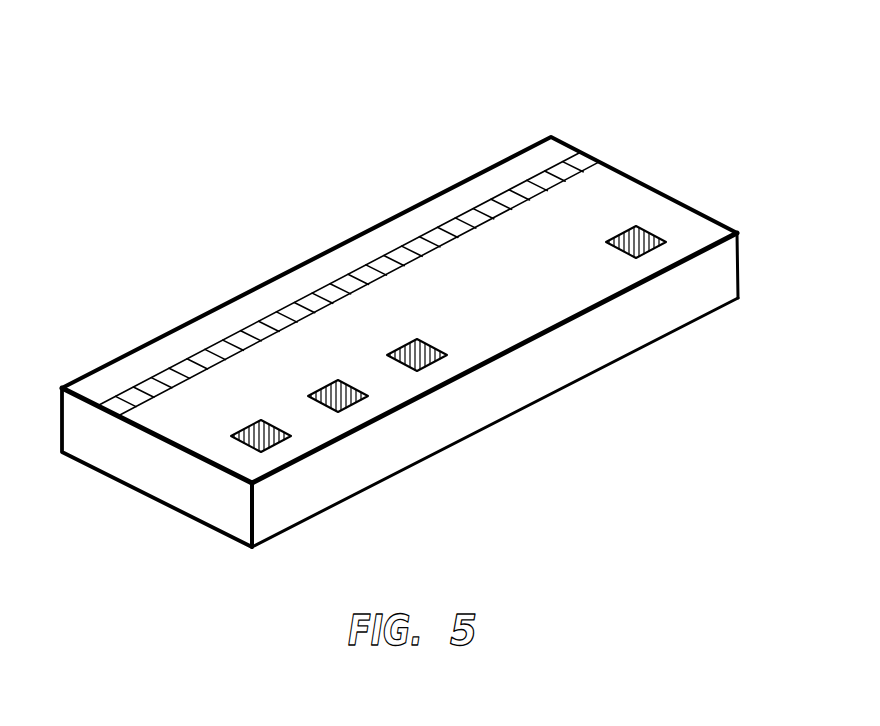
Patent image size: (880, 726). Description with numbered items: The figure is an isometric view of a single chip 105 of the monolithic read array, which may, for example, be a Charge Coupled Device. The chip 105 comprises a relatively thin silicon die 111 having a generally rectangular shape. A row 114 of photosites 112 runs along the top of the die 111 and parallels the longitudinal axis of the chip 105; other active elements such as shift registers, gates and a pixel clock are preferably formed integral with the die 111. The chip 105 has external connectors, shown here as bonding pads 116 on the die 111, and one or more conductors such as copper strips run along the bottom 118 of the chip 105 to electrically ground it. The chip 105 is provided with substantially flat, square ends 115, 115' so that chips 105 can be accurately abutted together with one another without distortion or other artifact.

The chip 105 is at (582, 73).
The silicon die 111 is at (567, 353).
The photosites 112 is at (308, 300).
The row of photosites 114 is at (478, 184).
The square end 115 is at (150, 467).
The square end 115' is at (779, 246).
The bonding pads 116 is at (367, 398).
The bottom 118 is at (437, 456).